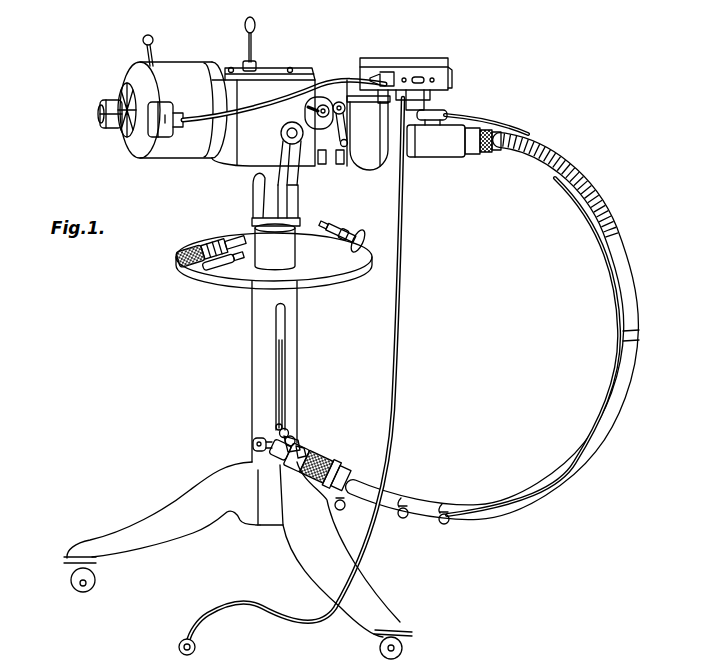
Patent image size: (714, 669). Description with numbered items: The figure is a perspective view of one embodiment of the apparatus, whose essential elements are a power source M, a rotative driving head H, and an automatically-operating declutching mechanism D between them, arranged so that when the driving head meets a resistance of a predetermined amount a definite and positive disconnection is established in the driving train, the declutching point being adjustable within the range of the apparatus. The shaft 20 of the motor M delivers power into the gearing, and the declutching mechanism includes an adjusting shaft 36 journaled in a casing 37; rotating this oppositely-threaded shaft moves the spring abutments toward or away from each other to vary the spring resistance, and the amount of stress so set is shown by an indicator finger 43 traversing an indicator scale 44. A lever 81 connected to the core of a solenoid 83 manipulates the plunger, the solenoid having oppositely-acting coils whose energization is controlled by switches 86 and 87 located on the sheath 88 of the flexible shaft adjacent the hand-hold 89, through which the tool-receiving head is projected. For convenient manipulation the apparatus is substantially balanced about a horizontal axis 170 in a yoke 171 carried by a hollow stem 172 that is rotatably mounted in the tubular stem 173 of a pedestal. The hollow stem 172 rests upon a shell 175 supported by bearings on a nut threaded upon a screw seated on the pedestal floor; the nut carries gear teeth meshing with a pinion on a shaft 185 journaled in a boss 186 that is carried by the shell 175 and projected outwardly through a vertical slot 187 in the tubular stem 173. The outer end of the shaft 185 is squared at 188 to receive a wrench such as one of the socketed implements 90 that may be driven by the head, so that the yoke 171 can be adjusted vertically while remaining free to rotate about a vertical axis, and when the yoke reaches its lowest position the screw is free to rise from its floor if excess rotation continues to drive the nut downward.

The power source M is at (183, 70).
The shaft 20 is at (102, 116).
The indicator finger 43 is at (317, 107).
The adjusting shaft 36 is at (340, 102).
The solenoid 83 is at (408, 64).
The lever 81 is at (444, 114).
The horizontal axis 170 is at (283, 143).
The yoke 171 is at (262, 198).
The casing 37 is at (322, 170).
The indicator scale 44 is at (340, 167).
The declutching mechanism D is at (368, 139).
The hollow stem 172 is at (286, 242).
The socketed implements 90 is at (337, 258).
The tubular stem 173 is at (257, 313).
The vertical slot 187 is at (285, 347).
The shell 175 is at (276, 423).
The boss 186 is at (290, 427).
The shaft 185 is at (295, 437).
The rotative driving head H is at (292, 449).
The squared end 188 is at (300, 434).
The hand-hold 89 is at (323, 484).
The sheath 88 is at (473, 510).
The switch 87 is at (403, 521).
The switch 86 is at (444, 525).